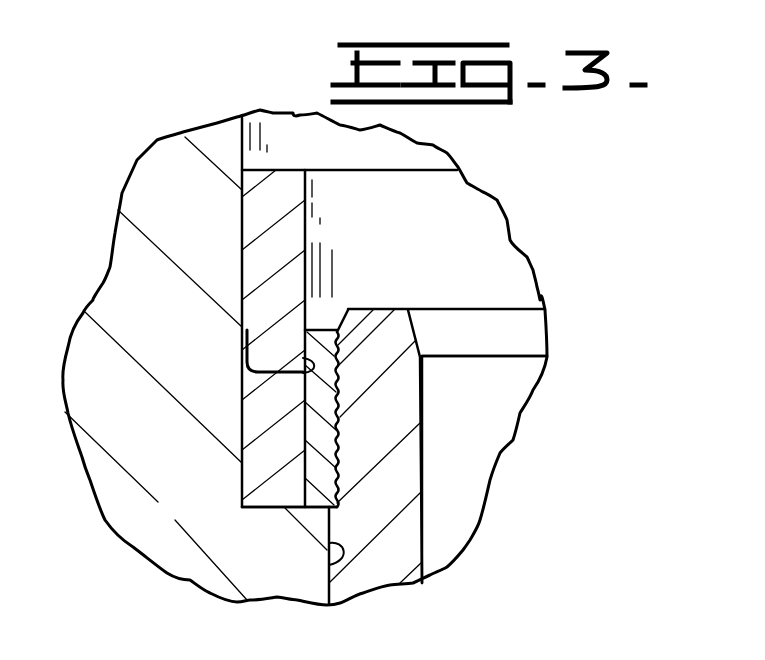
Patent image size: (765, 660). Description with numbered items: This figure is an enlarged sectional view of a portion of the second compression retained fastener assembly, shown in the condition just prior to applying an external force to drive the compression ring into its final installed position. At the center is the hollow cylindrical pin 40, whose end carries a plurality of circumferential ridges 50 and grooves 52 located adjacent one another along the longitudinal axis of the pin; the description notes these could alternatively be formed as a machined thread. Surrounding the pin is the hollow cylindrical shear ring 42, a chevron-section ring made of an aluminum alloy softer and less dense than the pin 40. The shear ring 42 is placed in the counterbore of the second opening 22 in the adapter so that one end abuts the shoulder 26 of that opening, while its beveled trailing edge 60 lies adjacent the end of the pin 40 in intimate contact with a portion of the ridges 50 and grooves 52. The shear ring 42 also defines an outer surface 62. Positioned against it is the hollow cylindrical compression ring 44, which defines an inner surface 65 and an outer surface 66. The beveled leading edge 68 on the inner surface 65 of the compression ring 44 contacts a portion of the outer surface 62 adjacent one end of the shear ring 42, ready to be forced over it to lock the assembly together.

The second opening 22 is at (328, 565).
The shoulder 26 is at (281, 507).
The hollow cylindrical pin 40 is at (395, 547).
The hollow cylindrical shear ring 42 is at (303, 342).
The hollow cylindrical compression ring 44 is at (253, 210).
The circumferential ridges 50 is at (338, 421).
The circumferential grooves 52 is at (338, 441).
The beveled edge 60 is at (337, 333).
The outer surface 62 is at (302, 437).
The inner surface 65 is at (306, 235).
The outer surface 66 is at (242, 263).
The beveled edge 68 is at (301, 379).